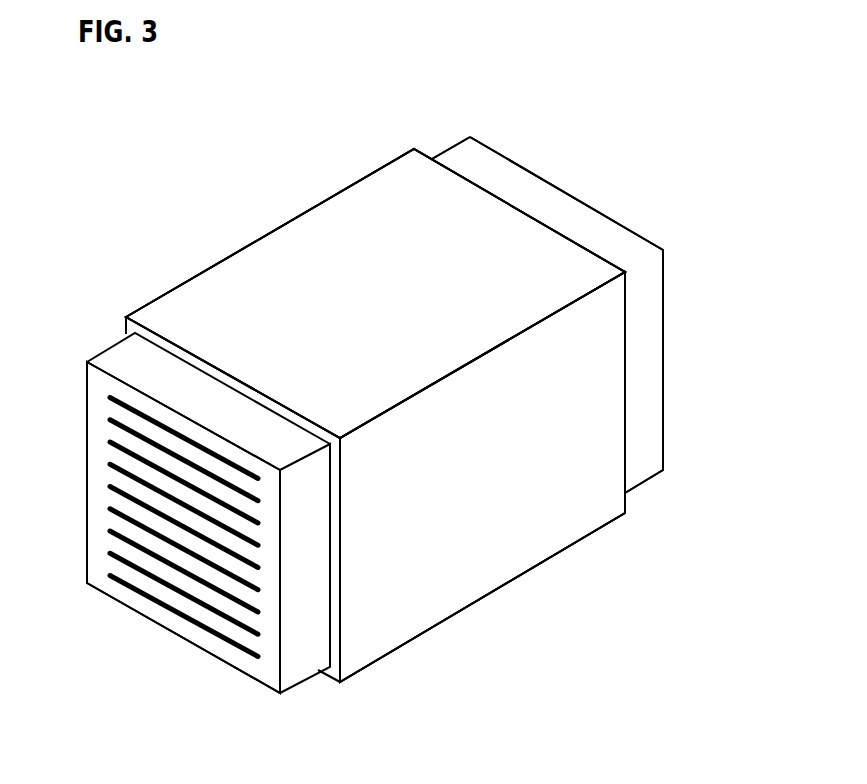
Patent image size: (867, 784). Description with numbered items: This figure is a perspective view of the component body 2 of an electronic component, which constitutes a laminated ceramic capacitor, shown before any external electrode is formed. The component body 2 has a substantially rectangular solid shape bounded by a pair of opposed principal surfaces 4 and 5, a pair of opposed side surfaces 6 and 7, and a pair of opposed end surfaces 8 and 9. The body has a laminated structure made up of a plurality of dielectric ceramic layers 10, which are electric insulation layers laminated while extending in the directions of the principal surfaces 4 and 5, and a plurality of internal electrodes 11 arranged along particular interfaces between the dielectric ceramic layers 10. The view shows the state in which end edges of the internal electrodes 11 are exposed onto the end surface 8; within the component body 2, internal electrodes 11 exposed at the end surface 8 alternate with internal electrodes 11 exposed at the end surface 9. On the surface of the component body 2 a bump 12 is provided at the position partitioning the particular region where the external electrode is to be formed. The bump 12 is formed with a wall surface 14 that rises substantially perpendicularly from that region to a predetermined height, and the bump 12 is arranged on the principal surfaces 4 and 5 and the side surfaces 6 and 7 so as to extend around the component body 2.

The component body 2 is at (150, 88).
The principal surface 4 is at (363, 252).
The principal surface 5 is at (412, 610).
The side surface 6 is at (509, 515).
The side surface 7 is at (232, 290).
The end surface 8 is at (162, 593).
The end surface 9 is at (647, 332).
The dielectric ceramic layers 10 is at (120, 482).
The internal electrodes 11 is at (130, 500).
The bump 12 is at (428, 152).
The wall surface 14 is at (170, 348).